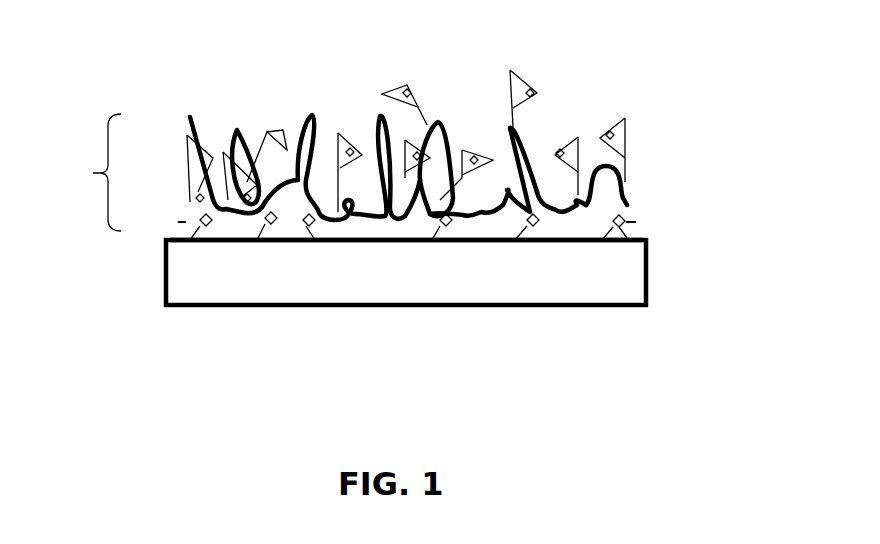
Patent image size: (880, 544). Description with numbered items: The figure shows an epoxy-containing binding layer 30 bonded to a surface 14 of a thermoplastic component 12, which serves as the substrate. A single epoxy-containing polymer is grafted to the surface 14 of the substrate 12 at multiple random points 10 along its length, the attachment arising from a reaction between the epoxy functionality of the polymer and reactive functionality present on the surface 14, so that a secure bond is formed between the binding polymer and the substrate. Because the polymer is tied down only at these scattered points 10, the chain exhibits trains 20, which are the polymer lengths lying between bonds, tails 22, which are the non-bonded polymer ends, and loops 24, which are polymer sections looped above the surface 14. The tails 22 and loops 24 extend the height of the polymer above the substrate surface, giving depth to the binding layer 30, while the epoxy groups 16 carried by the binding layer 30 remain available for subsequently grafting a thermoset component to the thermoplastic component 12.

The points 10 is at (182, 218).
The thermoplastic component 12 is at (278, 310).
The surface 14 is at (392, 242).
The epoxy groups 16 is at (428, 90).
The trains 20 is at (488, 234).
The tails 22 is at (630, 200).
The loops 24 is at (300, 110).
The binding layer 30 is at (85, 172).